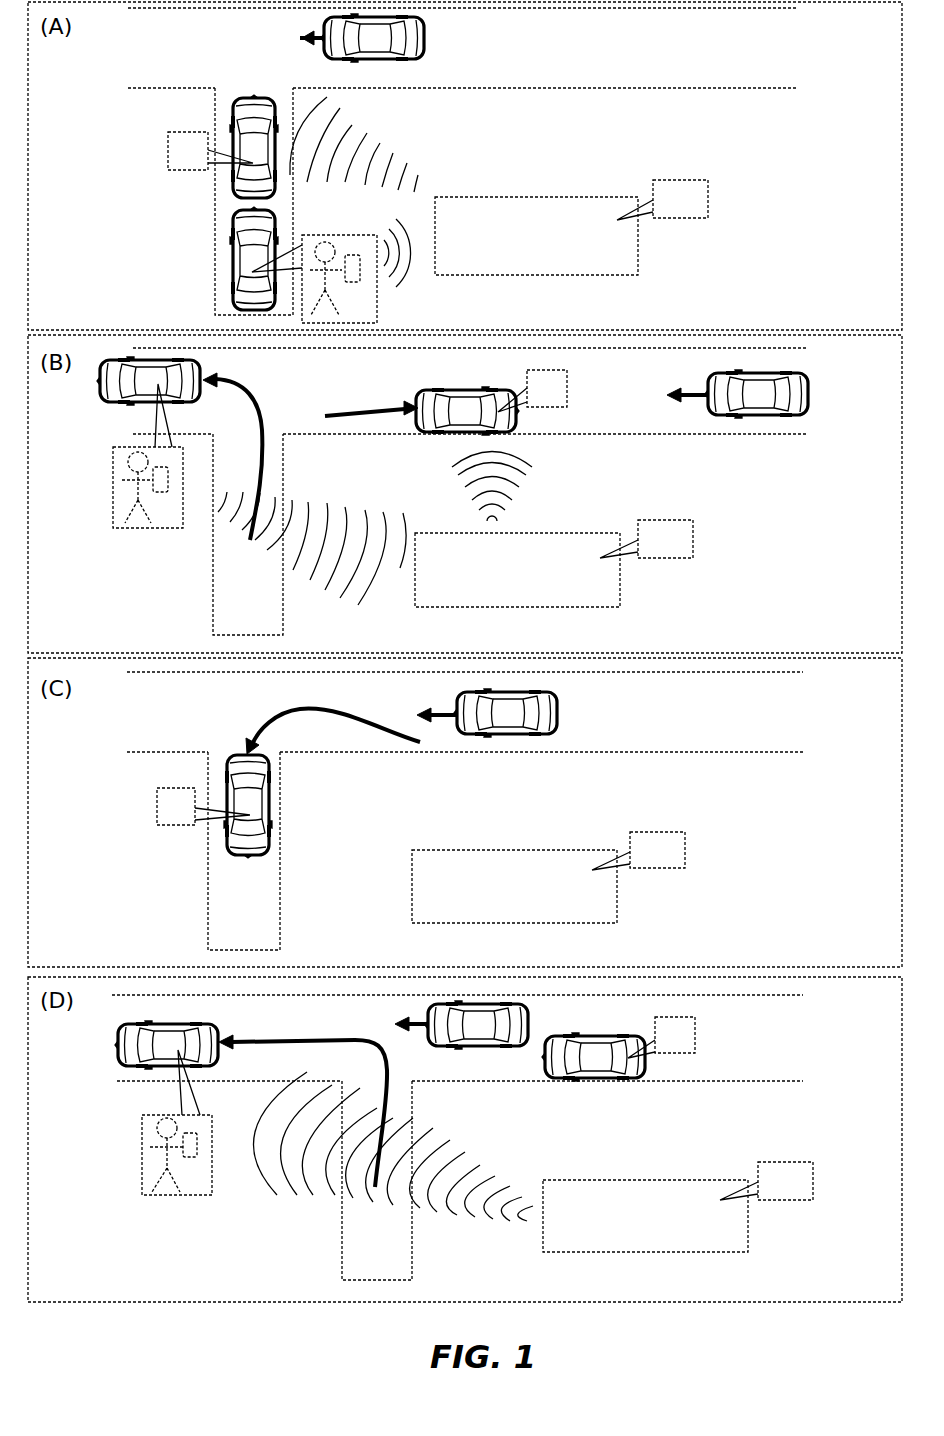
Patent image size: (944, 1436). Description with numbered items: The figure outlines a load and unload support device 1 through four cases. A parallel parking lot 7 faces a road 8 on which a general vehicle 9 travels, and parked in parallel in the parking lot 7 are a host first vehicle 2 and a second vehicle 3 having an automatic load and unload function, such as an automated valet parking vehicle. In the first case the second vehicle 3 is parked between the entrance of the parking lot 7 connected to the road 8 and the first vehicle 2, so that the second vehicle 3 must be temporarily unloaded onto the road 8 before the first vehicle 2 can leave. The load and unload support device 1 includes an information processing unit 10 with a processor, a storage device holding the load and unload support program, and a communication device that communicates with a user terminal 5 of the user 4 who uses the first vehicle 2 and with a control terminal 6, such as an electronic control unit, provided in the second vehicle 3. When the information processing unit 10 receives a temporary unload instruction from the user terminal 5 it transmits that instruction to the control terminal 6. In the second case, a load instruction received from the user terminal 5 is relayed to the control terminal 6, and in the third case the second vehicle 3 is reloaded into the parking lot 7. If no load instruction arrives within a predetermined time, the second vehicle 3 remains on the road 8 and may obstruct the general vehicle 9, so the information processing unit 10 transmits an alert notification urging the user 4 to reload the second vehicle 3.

The load and unload support device 1 is at (477, 197).
The first vehicle 2 is at (232, 218).
The second vehicle 3 is at (252, 95).
The user 4 is at (327, 242).
The user terminal 5 is at (353, 255).
The control terminal 6 is at (426, 595).
The parallel parking lot 7 is at (223, 275).
The road 8 is at (150, 72).
The general vehicle 9 is at (428, 37).
The information processing unit 10 is at (702, 690).